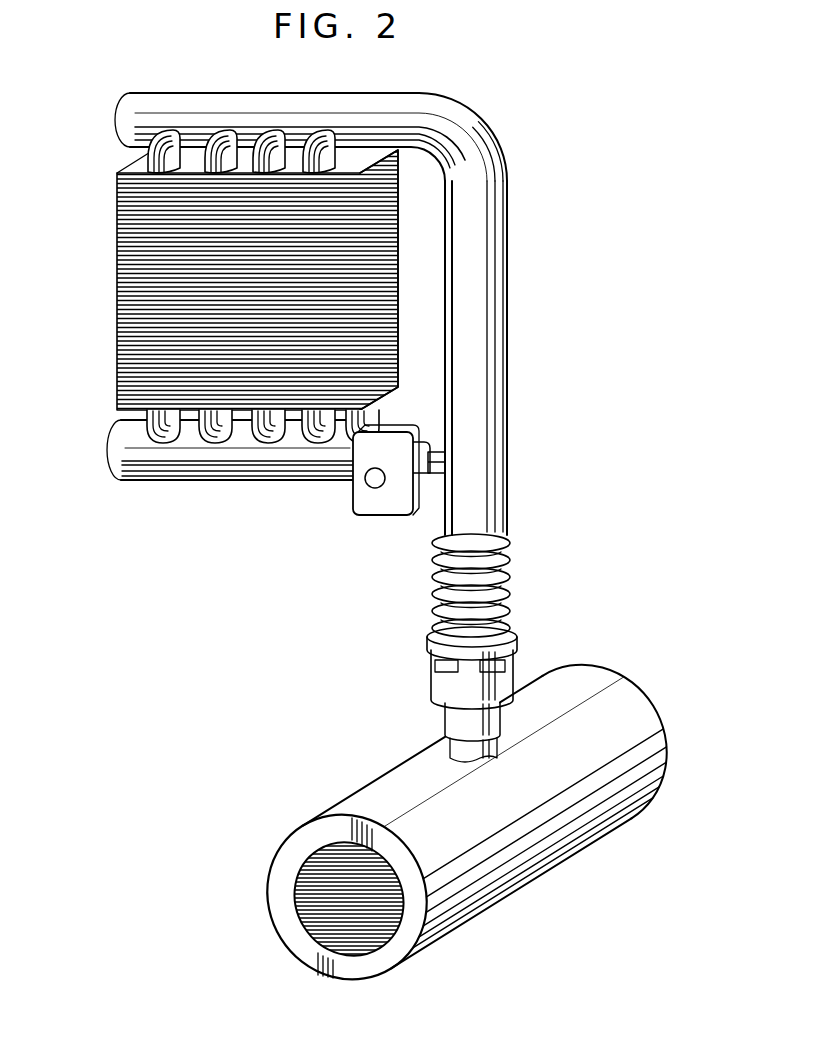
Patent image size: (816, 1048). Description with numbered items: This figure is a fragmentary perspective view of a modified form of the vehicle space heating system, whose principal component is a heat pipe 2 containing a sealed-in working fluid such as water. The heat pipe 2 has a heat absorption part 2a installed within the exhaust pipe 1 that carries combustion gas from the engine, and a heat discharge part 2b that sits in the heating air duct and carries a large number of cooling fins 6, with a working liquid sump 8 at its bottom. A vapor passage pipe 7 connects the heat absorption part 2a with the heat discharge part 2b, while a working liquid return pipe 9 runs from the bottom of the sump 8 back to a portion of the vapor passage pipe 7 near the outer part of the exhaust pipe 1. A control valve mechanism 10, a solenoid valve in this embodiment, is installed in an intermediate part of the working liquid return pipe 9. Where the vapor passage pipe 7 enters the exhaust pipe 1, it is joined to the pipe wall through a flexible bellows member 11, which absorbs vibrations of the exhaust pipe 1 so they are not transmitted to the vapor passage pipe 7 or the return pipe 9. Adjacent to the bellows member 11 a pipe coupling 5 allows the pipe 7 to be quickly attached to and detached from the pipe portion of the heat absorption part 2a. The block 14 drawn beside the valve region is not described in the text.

The exhaust pipe 1 is at (560, 826).
The heat pipe 2 is at (507, 368).
The heat absorption part 2a is at (468, 870).
The heat discharge part 2b is at (113, 266).
The pipe coupling 5 is at (514, 690).
The cooling fins 6 is at (398, 248).
The vapor passage pipe 7 is at (483, 247).
The working liquid sump 8 is at (243, 462).
The working liquid return pipe 9 is at (437, 478).
The control valve mechanism 10 is at (420, 440).
The flexible bellows member 11 is at (510, 576).
The mounting block 14 is at (364, 498).